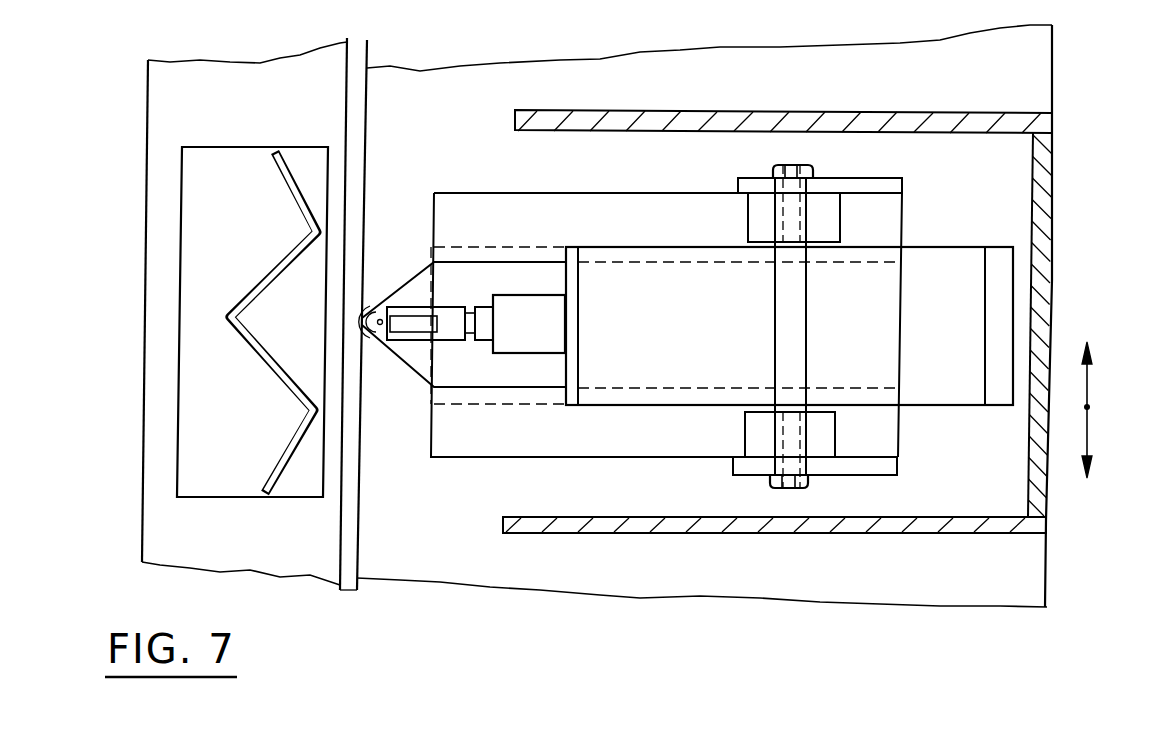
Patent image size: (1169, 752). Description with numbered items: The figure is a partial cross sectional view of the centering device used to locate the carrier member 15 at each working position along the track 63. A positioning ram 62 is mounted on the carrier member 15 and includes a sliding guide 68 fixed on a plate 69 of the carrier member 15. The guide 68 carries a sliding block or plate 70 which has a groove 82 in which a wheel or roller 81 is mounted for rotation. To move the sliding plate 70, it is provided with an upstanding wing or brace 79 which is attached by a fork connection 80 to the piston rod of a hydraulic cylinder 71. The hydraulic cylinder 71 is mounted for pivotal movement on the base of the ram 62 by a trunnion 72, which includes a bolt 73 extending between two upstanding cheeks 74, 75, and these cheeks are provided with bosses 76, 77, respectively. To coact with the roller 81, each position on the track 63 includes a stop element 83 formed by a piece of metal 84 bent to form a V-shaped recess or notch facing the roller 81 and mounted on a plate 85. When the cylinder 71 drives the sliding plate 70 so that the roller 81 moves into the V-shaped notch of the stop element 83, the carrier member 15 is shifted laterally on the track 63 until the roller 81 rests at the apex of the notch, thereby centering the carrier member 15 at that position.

The carrier member 15 is at (1058, 283).
The positioning ram 62 is at (982, 223).
The track 63 is at (128, 453).
The sliding guide 68 is at (473, 430).
The plate 69 is at (690, 573).
The sliding block 70 is at (422, 360).
The hydraulic cylinder 71 is at (967, 263).
The trunnion 72 is at (868, 227).
The bolt 73 is at (790, 168).
The cheek 74 is at (893, 467).
The cheek 75 is at (836, 183).
The boss 76 is at (817, 440).
The boss 77 is at (758, 222).
The wing 79 is at (403, 322).
The fork connection 80 is at (452, 318).
The roller 81 is at (380, 343).
The groove 82 is at (395, 345).
The stop element 83 is at (177, 401).
The piece of metal 84 is at (240, 346).
The plate 85 is at (207, 256).